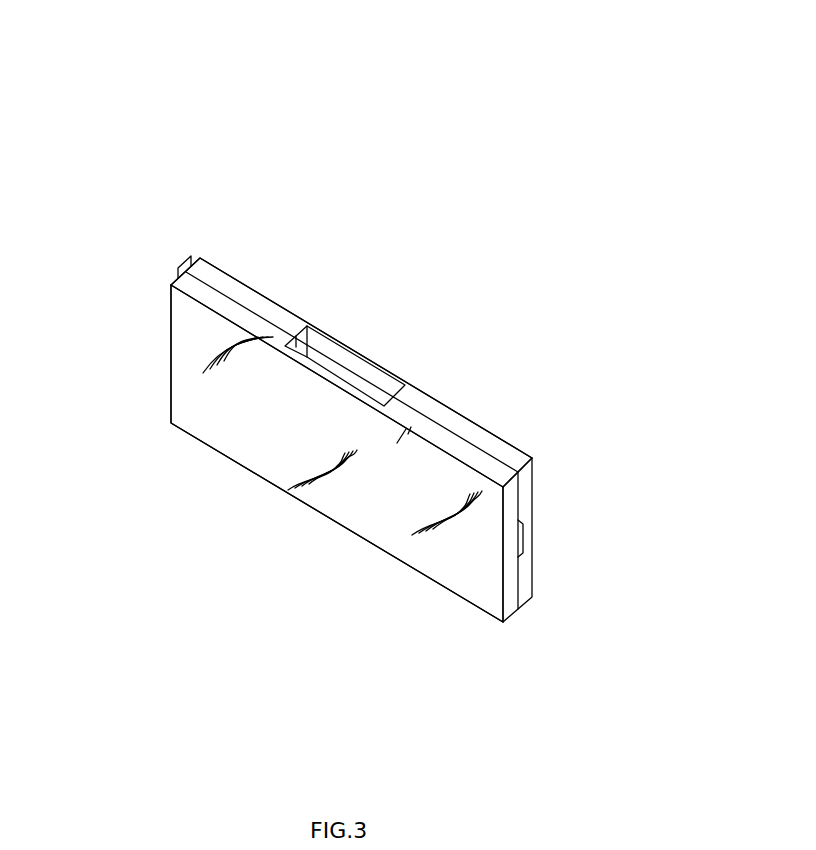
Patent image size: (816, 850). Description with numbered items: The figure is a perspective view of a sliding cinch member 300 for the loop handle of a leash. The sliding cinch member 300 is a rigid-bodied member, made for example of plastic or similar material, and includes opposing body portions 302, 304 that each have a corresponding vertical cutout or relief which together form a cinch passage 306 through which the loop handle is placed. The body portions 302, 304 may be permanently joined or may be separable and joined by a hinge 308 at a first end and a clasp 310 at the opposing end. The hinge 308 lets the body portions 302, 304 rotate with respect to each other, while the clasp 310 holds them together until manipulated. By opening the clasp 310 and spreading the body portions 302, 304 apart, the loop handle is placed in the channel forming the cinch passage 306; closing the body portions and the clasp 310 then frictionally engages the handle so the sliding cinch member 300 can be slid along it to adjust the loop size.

The sliding cinch member 300 is at (731, 45).
The body portion 302 is at (246, 284).
The body portion 304 is at (190, 360).
The cinch passage 306 is at (347, 368).
The hinge 308 is at (185, 258).
The clasp 310 is at (523, 541).